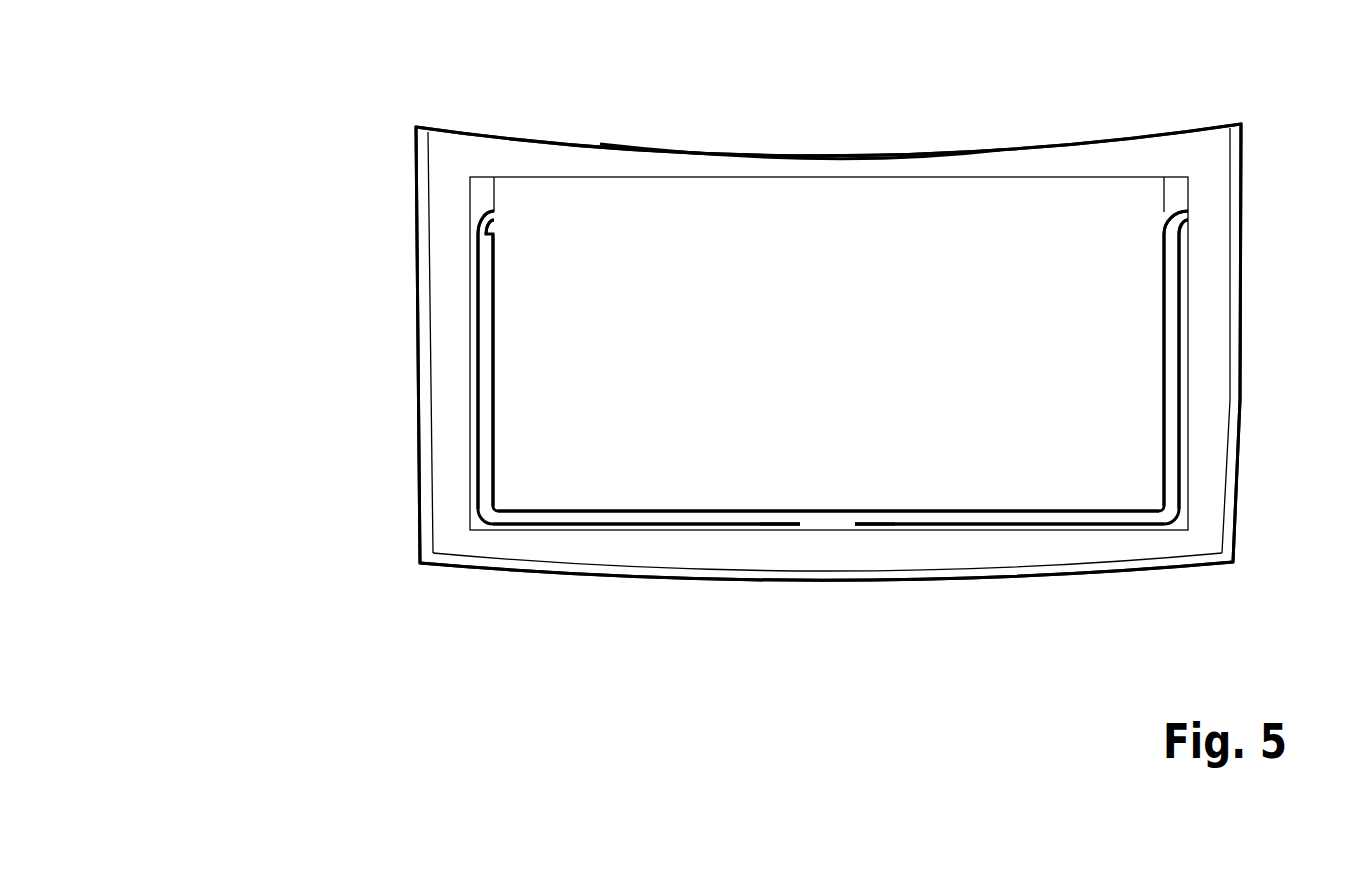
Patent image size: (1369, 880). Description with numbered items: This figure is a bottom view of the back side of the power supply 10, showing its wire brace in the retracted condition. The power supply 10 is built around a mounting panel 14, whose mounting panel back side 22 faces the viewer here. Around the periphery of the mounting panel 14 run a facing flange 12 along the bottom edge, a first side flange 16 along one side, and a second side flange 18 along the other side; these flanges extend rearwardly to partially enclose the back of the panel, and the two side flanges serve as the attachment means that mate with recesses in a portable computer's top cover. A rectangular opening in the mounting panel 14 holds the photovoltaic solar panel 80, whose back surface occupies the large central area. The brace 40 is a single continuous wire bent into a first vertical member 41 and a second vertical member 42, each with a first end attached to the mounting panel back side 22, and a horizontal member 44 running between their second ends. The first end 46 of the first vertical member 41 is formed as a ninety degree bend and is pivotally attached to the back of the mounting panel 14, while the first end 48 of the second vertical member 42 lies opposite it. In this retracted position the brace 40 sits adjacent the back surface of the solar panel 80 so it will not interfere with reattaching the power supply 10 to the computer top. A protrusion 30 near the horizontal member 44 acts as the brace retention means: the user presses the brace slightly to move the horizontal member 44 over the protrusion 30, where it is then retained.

The power supply 10 is at (358, 231).
The facing flange 12 is at (946, 580).
The mounting panel 14 is at (1065, 141).
The first side flange 16 is at (1243, 313).
The second side flange 18 is at (417, 346).
The mounting panel back side 22 is at (628, 158).
The protrusion 30 is at (822, 526).
The brace 40 is at (503, 500).
The first vertical member 41 is at (498, 338).
The second vertical member 42 is at (1160, 333).
The horizontal member 44 is at (681, 510).
The first end of first vertical member 46 is at (490, 219).
The first end of second vertical member 48 is at (1170, 216).
The photovoltaic solar panel 80 is at (817, 343).